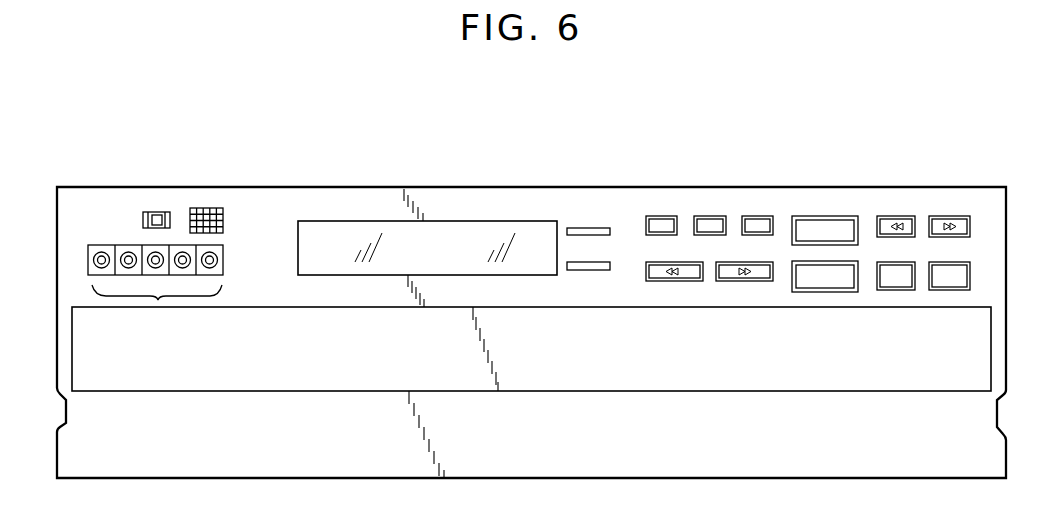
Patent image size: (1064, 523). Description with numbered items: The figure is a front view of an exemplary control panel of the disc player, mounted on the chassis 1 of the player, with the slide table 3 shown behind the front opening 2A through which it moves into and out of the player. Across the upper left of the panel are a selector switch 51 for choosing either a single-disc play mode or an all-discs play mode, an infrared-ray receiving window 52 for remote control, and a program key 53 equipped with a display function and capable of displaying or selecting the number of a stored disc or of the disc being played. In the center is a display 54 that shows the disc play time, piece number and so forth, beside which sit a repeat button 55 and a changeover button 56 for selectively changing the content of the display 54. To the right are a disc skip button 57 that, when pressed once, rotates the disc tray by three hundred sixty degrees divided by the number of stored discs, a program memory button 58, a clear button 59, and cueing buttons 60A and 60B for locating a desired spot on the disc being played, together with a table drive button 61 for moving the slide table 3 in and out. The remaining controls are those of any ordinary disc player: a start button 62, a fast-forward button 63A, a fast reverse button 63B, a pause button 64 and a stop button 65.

The chassis 1 is at (997, 231).
The front opening 2A is at (545, 389).
The slide table 3 is at (977, 357).
The selector switch 51 is at (157, 212).
The infrared-ray receiving window 52 is at (208, 208).
The program key 53 is at (155, 289).
The display 54 is at (388, 221).
The repeat button 55 is at (587, 227).
The changeover button 56 is at (606, 262).
The disc skip button 57 is at (657, 216).
The program memory button 58 is at (703, 216).
The clear button 59 is at (752, 216).
The cueing button 60A is at (683, 277).
The cueing button 60B is at (757, 277).
The table drive button 61 is at (820, 216).
The start button 62 is at (823, 282).
The fast-forward button 63A is at (890, 216).
The fast reverse button 63B is at (946, 216).
The pause button 64 is at (893, 283).
The stop button 65 is at (940, 283).